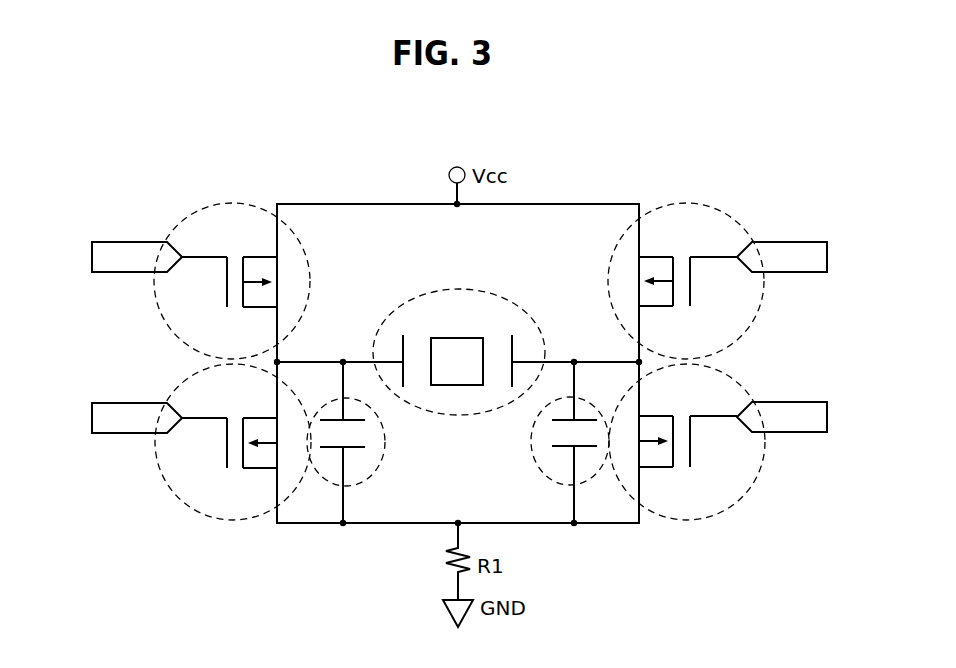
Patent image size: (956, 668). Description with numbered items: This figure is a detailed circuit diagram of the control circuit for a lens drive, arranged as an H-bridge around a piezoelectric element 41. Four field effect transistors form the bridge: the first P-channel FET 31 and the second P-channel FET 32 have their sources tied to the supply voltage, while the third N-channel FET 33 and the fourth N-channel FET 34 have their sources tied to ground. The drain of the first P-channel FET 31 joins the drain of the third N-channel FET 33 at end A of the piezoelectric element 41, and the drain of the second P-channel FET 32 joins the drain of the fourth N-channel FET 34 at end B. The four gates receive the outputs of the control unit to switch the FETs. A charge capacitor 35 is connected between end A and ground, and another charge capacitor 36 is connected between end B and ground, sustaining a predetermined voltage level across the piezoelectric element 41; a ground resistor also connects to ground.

The first P-channel FET 31 is at (233, 204).
The second P-channel FET 32 is at (685, 203).
The third N-channel FET 33 is at (235, 520).
The fourth N-channel FET 34 is at (686, 520).
The charge capacitor 35 is at (385, 445).
The charge capacitor 36 is at (537, 466).
The piezoelectric element 41 is at (465, 289).